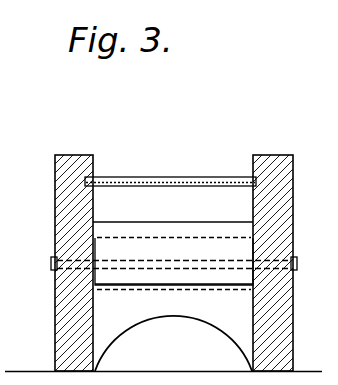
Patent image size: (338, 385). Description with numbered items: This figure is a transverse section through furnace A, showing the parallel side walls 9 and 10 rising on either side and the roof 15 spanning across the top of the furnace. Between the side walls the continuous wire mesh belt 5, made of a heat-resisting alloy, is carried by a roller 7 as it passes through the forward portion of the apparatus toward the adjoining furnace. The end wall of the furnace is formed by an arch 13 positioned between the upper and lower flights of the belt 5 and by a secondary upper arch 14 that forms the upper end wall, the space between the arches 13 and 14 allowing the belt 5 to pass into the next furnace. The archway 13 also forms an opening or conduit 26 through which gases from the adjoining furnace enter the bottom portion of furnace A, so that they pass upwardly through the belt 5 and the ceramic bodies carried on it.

The side wall 9 is at (64, 197).
The side wall 10 is at (284, 212).
The roof 15 is at (202, 182).
The secondary upper arch 14 is at (127, 197).
The continuous wire mesh belt 5 is at (167, 237).
The roller 7 is at (230, 237).
The arch 13 is at (112, 275).
The opening or conduit 26 is at (153, 318).